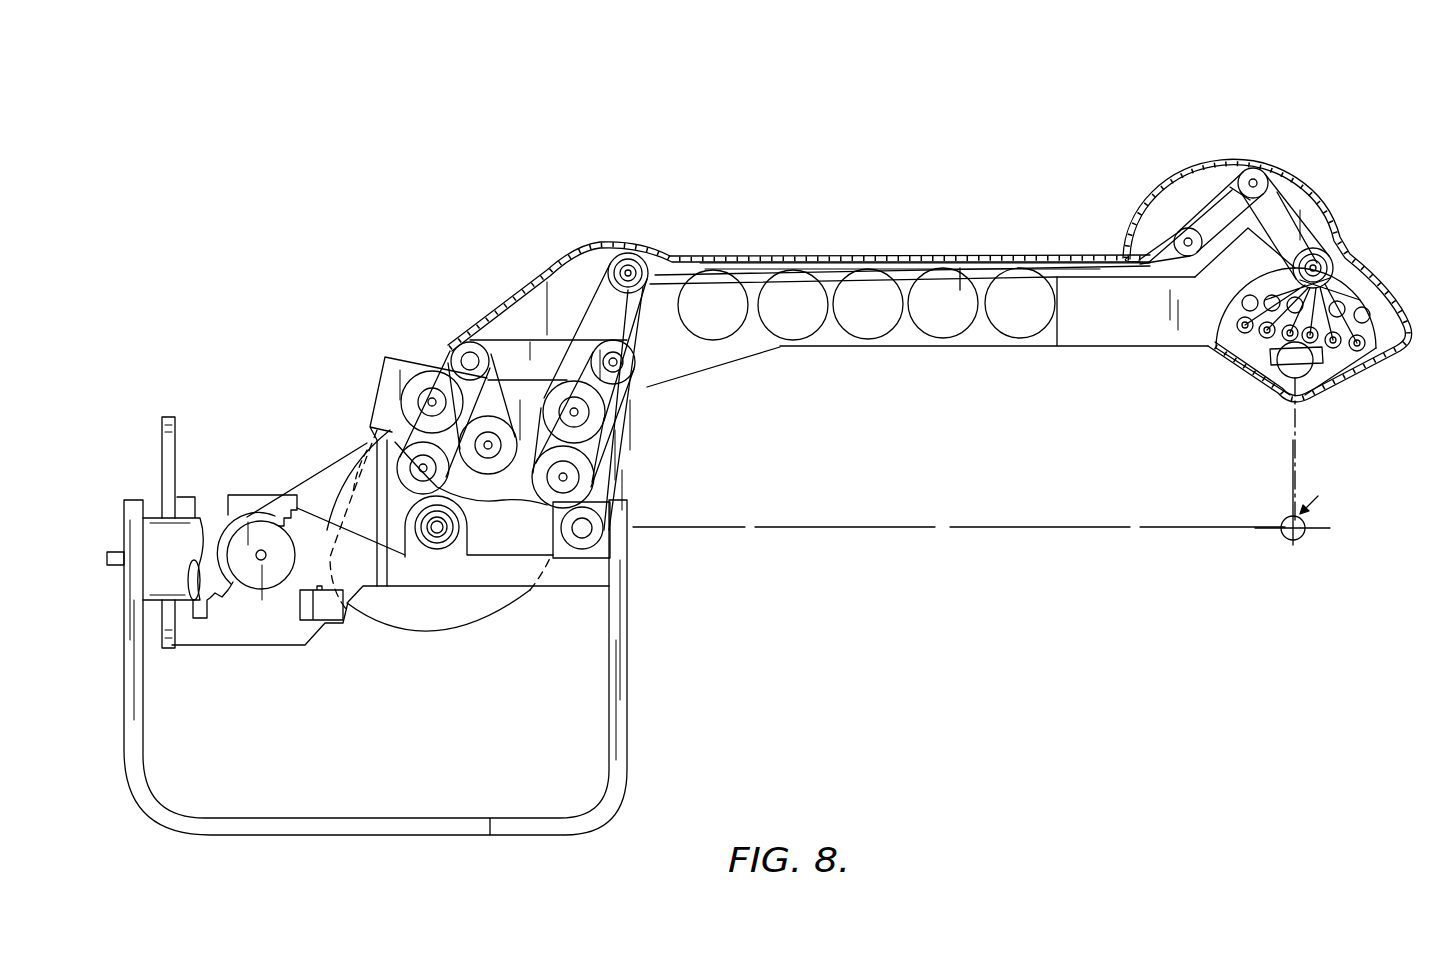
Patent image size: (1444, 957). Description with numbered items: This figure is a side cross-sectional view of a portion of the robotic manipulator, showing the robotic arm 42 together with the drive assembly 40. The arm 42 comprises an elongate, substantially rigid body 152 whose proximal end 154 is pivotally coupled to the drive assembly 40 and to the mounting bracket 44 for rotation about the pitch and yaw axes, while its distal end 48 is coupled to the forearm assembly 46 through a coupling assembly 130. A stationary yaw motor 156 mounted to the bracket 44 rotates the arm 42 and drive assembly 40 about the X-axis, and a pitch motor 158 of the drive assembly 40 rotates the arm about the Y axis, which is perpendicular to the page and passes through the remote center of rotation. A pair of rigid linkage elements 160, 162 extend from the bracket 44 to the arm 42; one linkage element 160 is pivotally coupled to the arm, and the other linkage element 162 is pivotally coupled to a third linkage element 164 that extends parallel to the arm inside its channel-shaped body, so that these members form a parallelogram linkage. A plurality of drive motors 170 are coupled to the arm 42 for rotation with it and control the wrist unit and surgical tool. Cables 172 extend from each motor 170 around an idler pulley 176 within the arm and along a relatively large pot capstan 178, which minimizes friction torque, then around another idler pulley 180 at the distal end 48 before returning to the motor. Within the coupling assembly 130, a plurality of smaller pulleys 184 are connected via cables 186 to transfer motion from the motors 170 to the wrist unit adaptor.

The drive assembly 40 is at (660, 474).
The robotic arm 42 is at (866, 214).
The mounting bracket 44 is at (628, 690).
The forearm assembly 46 is at (1278, 542).
The distal end 48 is at (1347, 232).
The coupling assembly 130 is at (1372, 375).
The elongate substantially rigid body 152 is at (985, 258).
The proximal end 154 is at (612, 243).
The yaw motor 156 is at (157, 578).
The pitch motor 158 is at (255, 533).
The linkage element 160 is at (517, 580).
The linkage element 162 is at (643, 387).
The third linkage element 164 is at (665, 288).
The drive motors 170 is at (427, 346).
The cables 172 is at (593, 320).
The idler pulley 176 is at (648, 262).
The pot capstan 178 is at (722, 318).
The idler pulley 180 is at (1264, 185).
The smaller pulleys 184 is at (1263, 338).
The cables 186 is at (1378, 268).